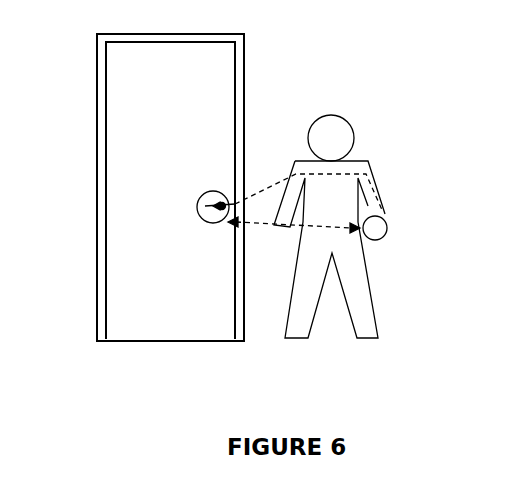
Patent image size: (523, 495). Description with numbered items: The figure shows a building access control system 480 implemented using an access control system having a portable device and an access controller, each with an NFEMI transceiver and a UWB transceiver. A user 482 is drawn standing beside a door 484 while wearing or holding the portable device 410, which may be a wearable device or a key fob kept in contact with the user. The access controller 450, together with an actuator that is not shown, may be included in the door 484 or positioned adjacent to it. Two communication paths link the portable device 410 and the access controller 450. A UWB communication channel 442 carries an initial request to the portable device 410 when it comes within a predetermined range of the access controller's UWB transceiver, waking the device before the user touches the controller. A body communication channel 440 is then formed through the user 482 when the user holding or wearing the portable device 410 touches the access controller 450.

The door 484 is at (97, 228).
The access controller 450 is at (201, 194).
The user 482 is at (349, 126).
The portable device 410 is at (386, 226).
The body communication channel 440 is at (284, 180).
The UWB communication channel 442 is at (258, 225).
The building access control system 480 is at (295, 401).